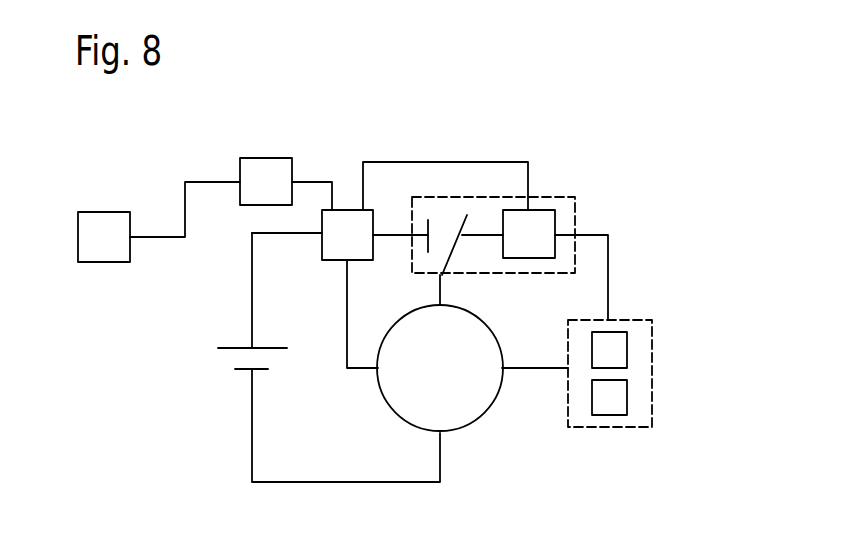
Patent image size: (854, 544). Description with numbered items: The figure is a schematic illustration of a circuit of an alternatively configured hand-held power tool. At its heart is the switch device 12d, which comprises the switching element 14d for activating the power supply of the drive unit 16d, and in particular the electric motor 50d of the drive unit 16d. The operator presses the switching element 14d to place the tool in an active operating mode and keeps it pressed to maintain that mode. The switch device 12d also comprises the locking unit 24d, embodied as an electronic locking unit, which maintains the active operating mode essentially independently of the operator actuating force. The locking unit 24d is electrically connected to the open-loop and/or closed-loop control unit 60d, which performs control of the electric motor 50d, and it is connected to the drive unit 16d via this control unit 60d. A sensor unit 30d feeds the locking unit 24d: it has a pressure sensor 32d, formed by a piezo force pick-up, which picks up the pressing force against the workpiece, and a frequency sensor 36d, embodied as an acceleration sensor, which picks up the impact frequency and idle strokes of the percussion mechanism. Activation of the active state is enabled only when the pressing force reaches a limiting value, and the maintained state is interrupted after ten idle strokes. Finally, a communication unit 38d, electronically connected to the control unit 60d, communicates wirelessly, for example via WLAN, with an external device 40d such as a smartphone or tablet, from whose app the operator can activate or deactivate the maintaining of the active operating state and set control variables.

The switch device 12d is at (577, 203).
The switching element 14d is at (455, 258).
The drive unit 16d is at (473, 399).
The electric motor 50d is at (478, 422).
The locking unit 24d is at (548, 208).
The sensor unit 30d is at (624, 313).
The pressure sensor 32d is at (628, 352).
The frequency sensor 36d is at (628, 400).
The communication unit 38d is at (267, 157).
The external device 40d is at (104, 210).
The open-loop and/or closed-loop control unit 60d is at (349, 208).